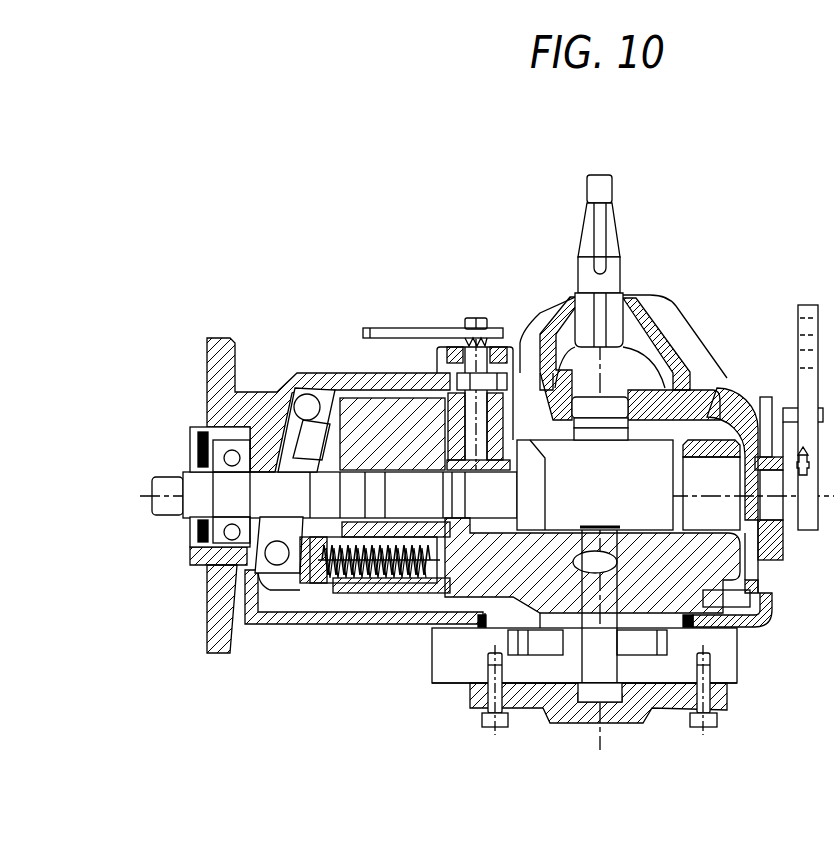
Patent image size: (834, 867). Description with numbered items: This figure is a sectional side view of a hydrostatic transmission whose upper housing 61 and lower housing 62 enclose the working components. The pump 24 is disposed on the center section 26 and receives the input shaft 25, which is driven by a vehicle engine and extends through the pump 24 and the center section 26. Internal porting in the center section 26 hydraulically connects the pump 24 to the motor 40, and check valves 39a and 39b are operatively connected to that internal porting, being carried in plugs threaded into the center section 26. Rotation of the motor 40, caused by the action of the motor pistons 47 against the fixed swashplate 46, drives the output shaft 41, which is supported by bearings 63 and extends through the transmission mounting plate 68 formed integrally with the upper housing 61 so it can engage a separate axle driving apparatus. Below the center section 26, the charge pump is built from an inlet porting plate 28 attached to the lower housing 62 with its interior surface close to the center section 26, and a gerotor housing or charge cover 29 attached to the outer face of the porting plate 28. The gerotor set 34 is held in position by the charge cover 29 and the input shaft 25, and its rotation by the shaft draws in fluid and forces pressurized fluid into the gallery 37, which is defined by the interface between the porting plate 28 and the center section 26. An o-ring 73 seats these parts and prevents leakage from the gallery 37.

The input shaft 25 is at (617, 238).
The upper housing 61 is at (707, 378).
The transmission mounting plate 68 is at (207, 378).
The motor 40 is at (380, 417).
The bearings 63 is at (193, 449).
The output shaft 41 is at (158, 476).
The fixed swashplate 46 is at (266, 556).
The motor pistons 47 is at (317, 578).
The lower housing 62 is at (378, 617).
The o-ring 73 is at (481, 630).
The check valve 39a is at (512, 637).
The pump 24 is at (650, 476).
The center section 26 is at (743, 567).
The check valve 39b is at (733, 601).
The gallery 37 is at (677, 640).
The inlet porting plate 28 is at (725, 668).
The gerotor housing 29 is at (647, 718).
The gerotor set 34 is at (578, 690).